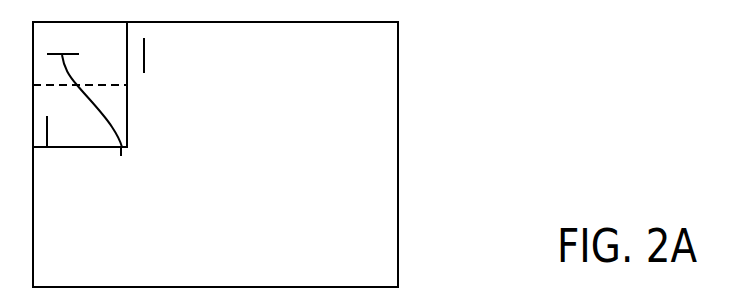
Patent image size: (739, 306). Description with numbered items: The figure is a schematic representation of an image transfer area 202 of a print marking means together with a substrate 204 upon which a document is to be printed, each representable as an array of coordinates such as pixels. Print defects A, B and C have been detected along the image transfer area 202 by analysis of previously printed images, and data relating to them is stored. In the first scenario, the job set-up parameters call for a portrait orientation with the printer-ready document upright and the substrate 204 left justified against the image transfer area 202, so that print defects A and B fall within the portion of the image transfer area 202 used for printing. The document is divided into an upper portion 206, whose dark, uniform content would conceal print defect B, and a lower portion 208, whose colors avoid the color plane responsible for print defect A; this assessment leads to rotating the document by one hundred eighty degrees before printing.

The image transfer area 202 is at (398, 155).
The substrate 204 is at (127, 103).
The upper portion 206 is at (109, 70).
The lower portion 208 is at (117, 122).
The print defect A is at (121, 167).
The print defect B is at (47, 130).
The print defect C is at (144, 55).